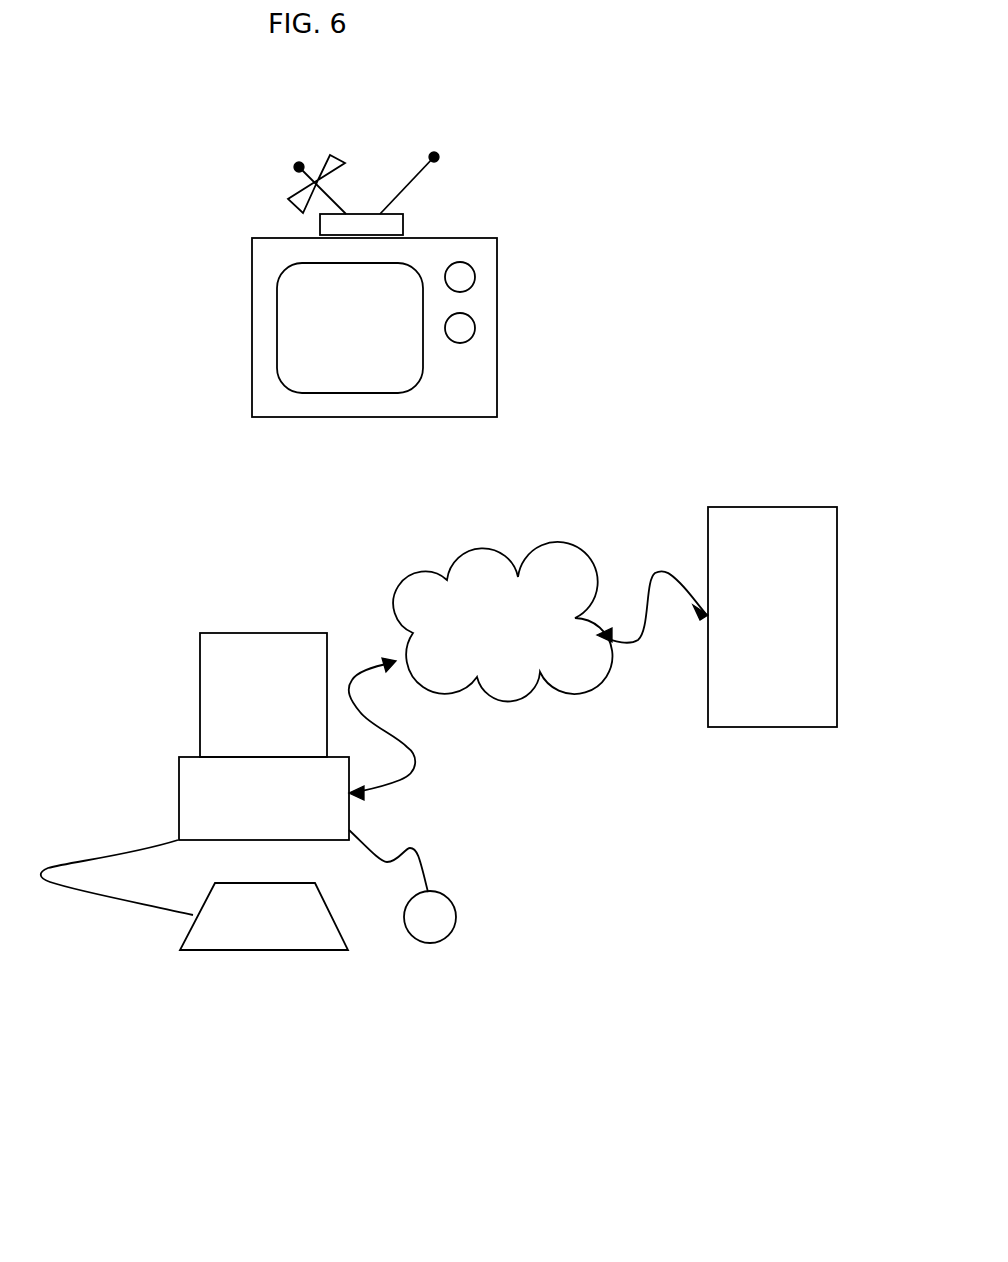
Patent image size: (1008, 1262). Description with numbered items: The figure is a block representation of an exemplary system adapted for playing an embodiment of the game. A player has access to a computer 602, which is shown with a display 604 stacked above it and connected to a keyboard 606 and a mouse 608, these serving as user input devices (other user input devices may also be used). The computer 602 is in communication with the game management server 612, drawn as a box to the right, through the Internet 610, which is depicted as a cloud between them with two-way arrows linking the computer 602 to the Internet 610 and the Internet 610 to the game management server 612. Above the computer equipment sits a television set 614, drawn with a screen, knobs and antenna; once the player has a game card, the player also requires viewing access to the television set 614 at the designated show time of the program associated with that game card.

The computer 602 is at (216, 780).
The display 604 is at (260, 660).
The keyboard 606 is at (263, 927).
The mouse 608 is at (432, 916).
The Internet 610 is at (492, 595).
The game management server 612 is at (730, 702).
The television set 614 is at (482, 252).